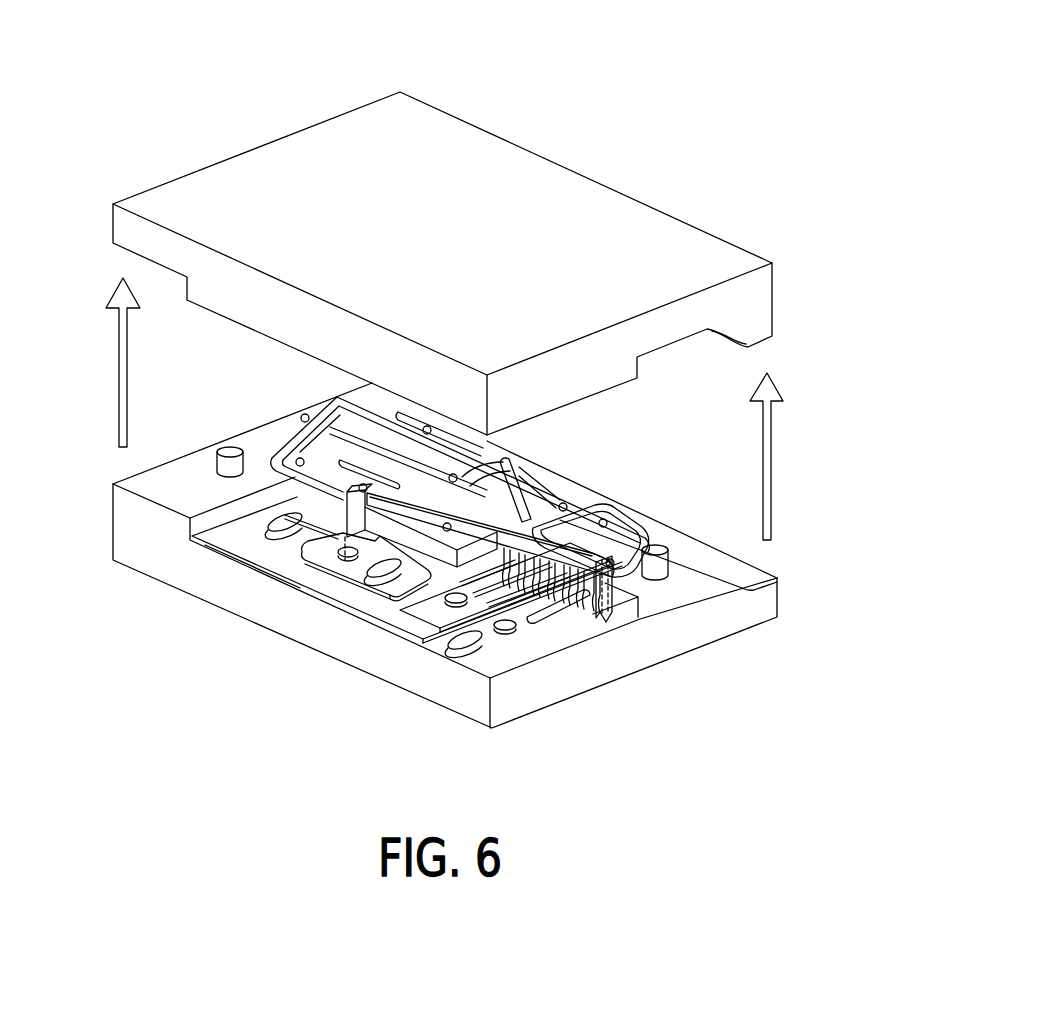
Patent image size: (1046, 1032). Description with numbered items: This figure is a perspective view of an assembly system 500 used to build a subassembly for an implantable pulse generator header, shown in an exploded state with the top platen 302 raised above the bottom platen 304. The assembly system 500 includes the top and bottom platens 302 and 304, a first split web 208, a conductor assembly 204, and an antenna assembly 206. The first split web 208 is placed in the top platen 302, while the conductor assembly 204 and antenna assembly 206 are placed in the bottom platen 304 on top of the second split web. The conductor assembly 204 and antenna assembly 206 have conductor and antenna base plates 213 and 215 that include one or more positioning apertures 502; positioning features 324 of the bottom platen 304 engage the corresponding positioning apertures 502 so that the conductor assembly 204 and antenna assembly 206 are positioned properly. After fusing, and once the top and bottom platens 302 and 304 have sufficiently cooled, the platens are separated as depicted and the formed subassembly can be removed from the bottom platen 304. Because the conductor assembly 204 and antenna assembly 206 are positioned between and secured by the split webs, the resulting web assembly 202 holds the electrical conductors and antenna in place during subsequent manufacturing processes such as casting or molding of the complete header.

The assembly system 500 is at (616, 88).
The top platen 302 is at (723, 257).
The bottom platen 304 is at (758, 610).
The web assembly 202 is at (292, 435).
The first split web 208 is at (500, 484).
The conductor assembly 204 is at (213, 540).
The conductor base plate 213 is at (282, 562).
The antenna base plate 215 is at (338, 580).
The antenna assembly 206 is at (462, 645).
The positioning features 324 is at (285, 515).
The positioning apertures 502 is at (268, 543).